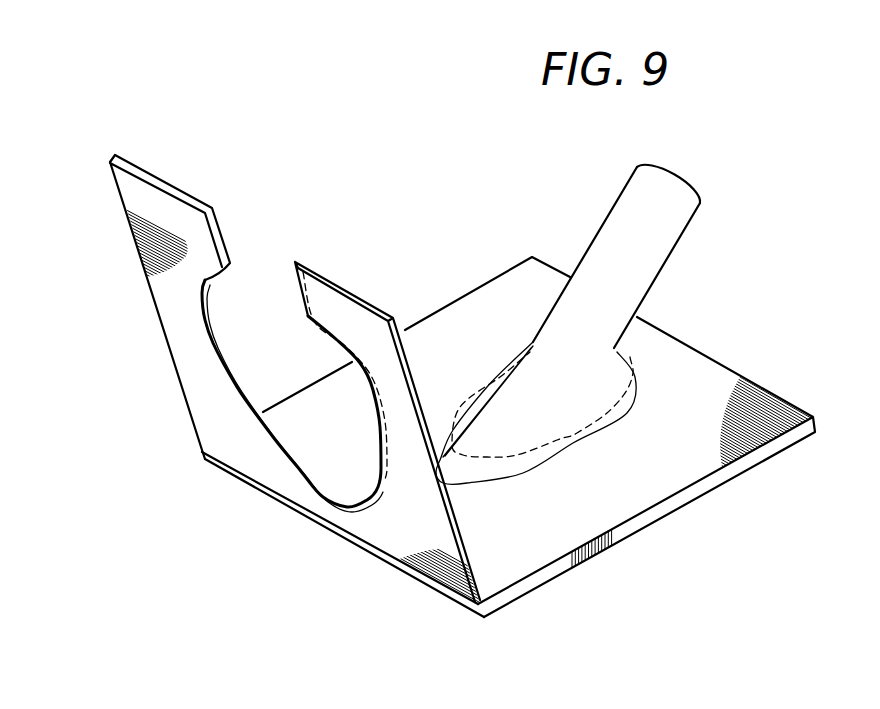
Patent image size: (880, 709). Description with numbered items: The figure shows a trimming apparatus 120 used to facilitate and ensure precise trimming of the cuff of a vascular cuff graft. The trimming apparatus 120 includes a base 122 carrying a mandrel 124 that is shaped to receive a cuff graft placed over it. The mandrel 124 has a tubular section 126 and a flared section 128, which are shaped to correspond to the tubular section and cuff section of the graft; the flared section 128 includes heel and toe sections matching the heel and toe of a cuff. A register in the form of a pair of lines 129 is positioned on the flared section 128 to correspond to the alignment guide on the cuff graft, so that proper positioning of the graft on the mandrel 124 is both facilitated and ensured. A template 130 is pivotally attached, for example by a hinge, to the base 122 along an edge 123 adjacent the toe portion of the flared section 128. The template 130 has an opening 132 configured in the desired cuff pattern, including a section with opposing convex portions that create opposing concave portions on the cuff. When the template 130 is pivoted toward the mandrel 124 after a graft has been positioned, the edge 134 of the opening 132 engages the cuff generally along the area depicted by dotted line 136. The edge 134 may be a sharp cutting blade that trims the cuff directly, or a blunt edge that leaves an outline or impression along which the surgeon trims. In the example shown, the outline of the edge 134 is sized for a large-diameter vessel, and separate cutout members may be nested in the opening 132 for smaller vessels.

The trimming apparatus 120 is at (268, 337).
The base 122 is at (722, 362).
The edge 123 is at (368, 548).
The mandrel 124 is at (664, 256).
The tubular section 126 is at (686, 230).
The flared section 128 is at (575, 442).
The pair of lines 129 is at (470, 432).
The template 130 is at (128, 224).
The opening 132 is at (272, 323).
The edge 134 is at (220, 344).
The dotted line 136 is at (610, 412).